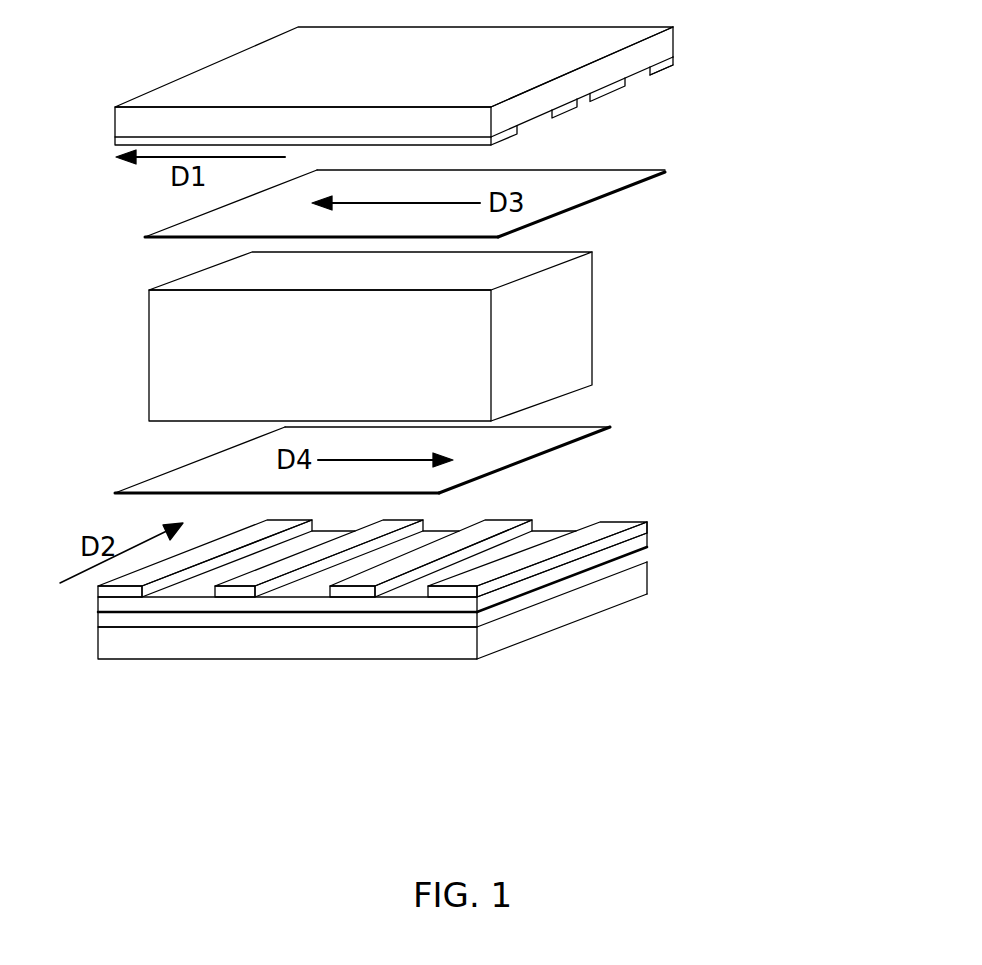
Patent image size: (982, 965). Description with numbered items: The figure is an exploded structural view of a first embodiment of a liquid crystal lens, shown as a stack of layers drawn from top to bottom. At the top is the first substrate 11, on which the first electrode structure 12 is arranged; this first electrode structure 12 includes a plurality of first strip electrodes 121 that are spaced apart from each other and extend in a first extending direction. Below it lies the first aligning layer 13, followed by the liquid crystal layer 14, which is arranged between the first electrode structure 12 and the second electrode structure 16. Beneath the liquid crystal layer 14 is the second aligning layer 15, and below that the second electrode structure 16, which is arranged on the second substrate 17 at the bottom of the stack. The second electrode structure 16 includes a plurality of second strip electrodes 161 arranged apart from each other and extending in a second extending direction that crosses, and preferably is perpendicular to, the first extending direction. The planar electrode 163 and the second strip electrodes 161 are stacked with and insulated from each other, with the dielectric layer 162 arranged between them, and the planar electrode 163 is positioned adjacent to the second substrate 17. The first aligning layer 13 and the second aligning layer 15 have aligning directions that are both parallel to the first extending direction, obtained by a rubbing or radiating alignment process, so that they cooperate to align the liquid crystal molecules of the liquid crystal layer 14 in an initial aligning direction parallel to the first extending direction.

The first substrate 11 is at (653, 48).
The first electrode structure 12 is at (625, 92).
The first strip electrodes 121 is at (665, 72).
The first aligning layer 13 is at (665, 172).
The liquid crystal layer 14 is at (585, 300).
The second aligning layer 15 is at (592, 432).
The second electrode structure 16 is at (472, 653).
The second strip electrodes 161 is at (363, 592).
The dielectric layer 162 is at (268, 604).
The planar electrode 163 is at (238, 619).
The second substrate 17 is at (233, 644).